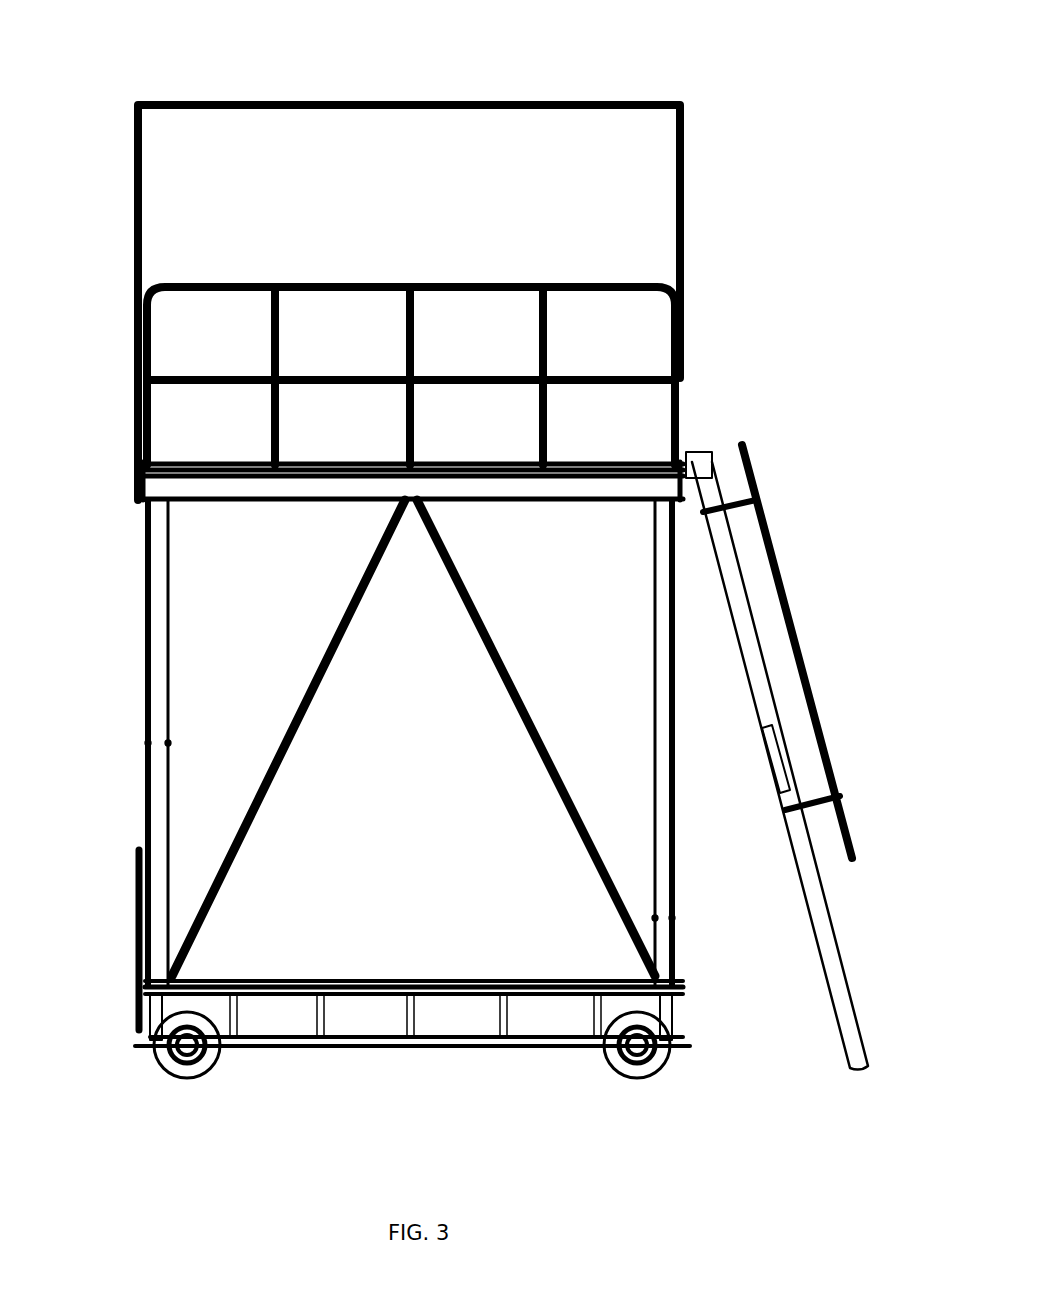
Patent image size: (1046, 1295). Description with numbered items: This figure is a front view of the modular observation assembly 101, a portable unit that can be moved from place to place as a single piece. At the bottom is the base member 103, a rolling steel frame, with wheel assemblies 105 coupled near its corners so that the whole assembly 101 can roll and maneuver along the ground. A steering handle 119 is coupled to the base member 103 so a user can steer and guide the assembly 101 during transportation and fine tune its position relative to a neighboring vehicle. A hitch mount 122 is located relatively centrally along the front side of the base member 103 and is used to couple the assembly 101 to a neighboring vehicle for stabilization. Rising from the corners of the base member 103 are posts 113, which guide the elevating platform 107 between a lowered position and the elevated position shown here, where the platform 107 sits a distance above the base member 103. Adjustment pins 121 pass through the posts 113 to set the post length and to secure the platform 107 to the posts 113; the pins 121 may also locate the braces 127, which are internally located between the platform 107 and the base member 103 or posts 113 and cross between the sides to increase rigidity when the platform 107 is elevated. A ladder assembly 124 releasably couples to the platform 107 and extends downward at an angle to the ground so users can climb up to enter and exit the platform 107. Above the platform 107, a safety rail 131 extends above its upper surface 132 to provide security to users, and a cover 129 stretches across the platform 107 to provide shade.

The modular observation assembly 101 is at (658, 52).
The base member 103 is at (372, 1063).
The wheel assemblies 105 is at (216, 1094).
The elevating platform 107 is at (548, 516).
The posts 113 is at (146, 645).
The steering handle 119 is at (136, 905).
The adjustment pins 121 is at (145, 736).
The hitch mount 122 is at (410, 983).
The ladder assembly 124 is at (773, 564).
The braces 127 is at (523, 718).
The cover 129 is at (337, 108).
The safety rail 131 is at (473, 283).
The upper surface 132 is at (290, 462).